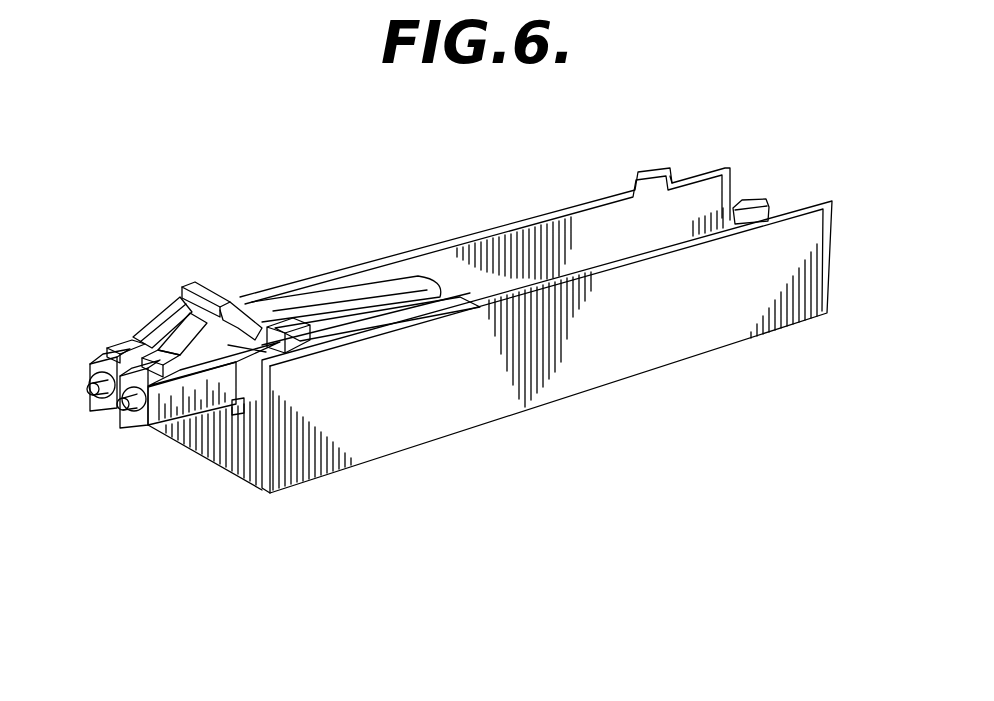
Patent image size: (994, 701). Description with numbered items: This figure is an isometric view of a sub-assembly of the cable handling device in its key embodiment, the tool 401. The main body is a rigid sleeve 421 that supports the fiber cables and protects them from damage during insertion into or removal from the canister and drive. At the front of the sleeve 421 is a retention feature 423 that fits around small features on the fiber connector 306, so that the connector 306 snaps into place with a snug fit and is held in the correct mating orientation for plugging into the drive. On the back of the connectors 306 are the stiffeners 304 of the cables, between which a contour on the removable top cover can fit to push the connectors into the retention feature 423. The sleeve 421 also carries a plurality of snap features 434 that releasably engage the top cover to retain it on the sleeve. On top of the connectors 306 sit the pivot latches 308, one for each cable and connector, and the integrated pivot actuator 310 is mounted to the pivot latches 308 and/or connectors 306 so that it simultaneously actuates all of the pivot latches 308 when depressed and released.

The tool 401 is at (328, 140).
The snap features 434 is at (747, 208).
The sleeve 421 is at (663, 352).
The stiffeners 304 is at (332, 302).
The fiber connector 306 is at (175, 401).
The retention feature 423 is at (240, 383).
The pivot latches 308 is at (170, 313).
The pivot actuator 310 is at (215, 280).